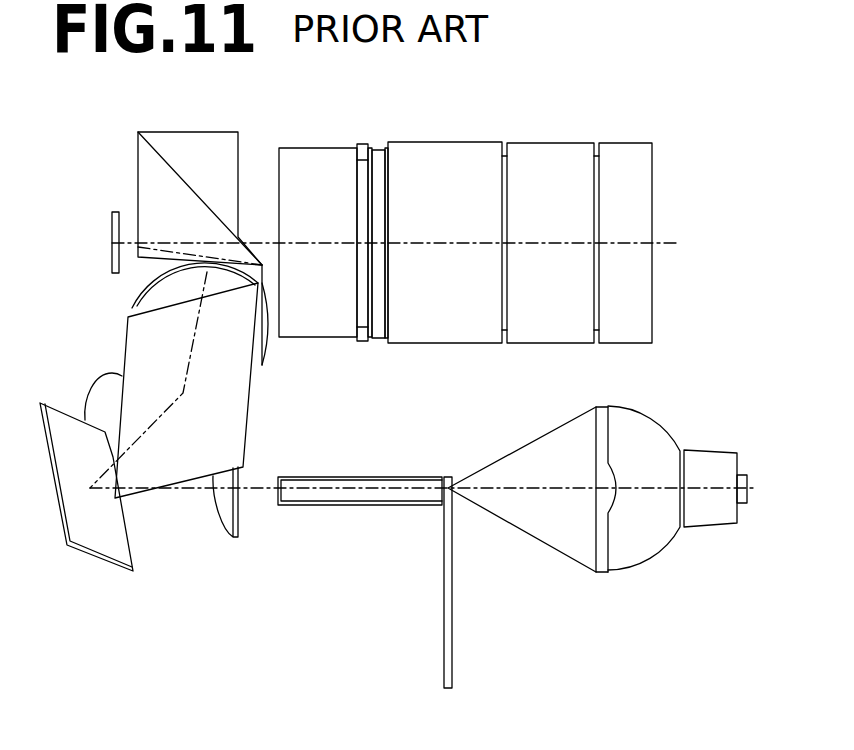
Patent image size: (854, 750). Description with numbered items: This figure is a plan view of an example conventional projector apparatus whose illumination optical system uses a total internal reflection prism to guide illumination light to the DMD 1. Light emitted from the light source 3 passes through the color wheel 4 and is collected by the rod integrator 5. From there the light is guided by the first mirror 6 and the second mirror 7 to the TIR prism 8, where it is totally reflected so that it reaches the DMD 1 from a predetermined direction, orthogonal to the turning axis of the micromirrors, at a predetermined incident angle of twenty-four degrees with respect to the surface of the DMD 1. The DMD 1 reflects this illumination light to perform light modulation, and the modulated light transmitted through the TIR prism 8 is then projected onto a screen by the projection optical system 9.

The DMD 1 is at (112, 222).
The light source 3 is at (648, 547).
The color wheel 4 is at (452, 644).
The rod integrator 5 is at (370, 505).
The first mirror 6 is at (102, 543).
The second mirror 7 is at (187, 470).
The TIR prism 8 is at (190, 137).
The projection optical system 9 is at (455, 148).